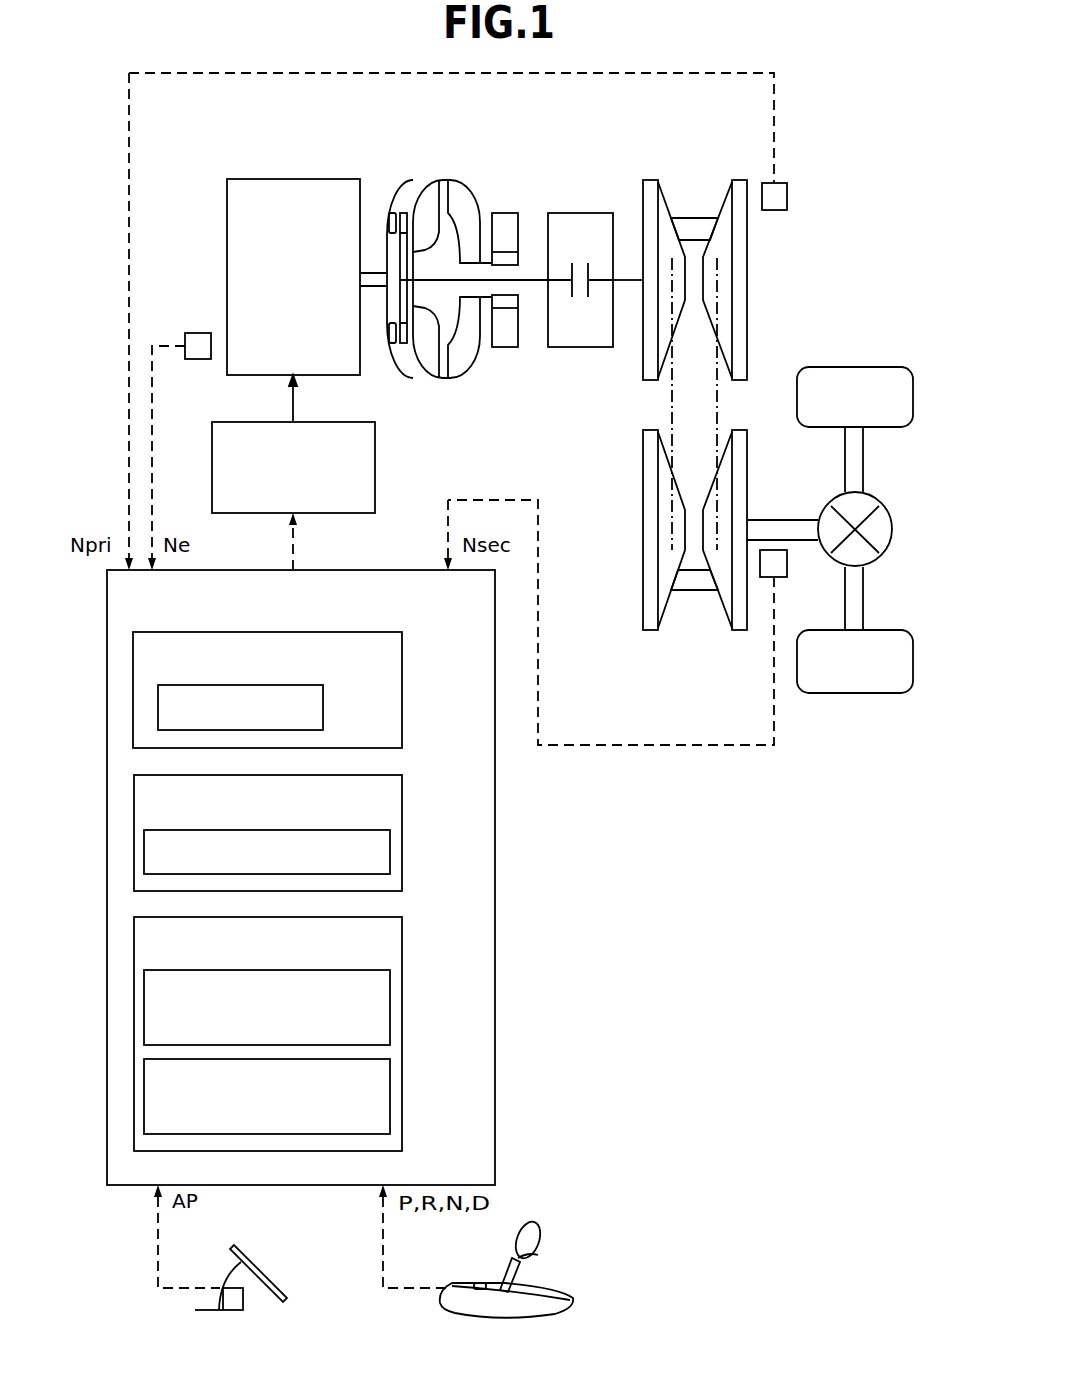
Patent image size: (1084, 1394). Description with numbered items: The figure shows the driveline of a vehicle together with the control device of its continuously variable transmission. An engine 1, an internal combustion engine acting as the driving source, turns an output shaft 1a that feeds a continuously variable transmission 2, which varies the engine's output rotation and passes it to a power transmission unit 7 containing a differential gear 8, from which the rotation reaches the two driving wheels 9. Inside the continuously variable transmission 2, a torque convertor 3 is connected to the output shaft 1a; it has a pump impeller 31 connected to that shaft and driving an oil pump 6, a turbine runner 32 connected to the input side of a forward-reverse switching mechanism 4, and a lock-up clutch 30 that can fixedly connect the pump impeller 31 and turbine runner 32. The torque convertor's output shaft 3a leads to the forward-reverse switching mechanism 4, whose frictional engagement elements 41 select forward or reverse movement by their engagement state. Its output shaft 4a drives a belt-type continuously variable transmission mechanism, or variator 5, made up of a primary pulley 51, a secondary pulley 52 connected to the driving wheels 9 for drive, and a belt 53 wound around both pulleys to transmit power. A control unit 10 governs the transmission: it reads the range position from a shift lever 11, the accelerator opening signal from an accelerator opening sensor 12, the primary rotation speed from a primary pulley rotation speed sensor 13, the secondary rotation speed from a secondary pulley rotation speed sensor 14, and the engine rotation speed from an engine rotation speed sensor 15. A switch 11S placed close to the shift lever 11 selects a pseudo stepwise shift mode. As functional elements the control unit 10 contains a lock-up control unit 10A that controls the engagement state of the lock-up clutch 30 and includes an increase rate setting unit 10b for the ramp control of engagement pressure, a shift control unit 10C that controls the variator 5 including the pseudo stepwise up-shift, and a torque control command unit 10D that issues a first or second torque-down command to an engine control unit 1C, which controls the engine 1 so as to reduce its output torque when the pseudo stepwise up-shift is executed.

The engine 1 is at (316, 178).
The output shaft of the engine 1a is at (377, 290).
The engine control unit 1C is at (375, 448).
The continuously variable transmission 2 is at (820, 266).
The torque convertor 3 is at (448, 258).
The output shaft of the torque convertor 3a is at (442, 283).
The lock-up clutch 30 is at (400, 215).
The pump impeller 31 is at (462, 198).
The turbine runner 32 is at (427, 198).
The forward-reverse switching mechanism 4 is at (591, 263).
The output shaft of the forward-reverse switching mechanism 4a is at (627, 285).
The frictional engagement elements 41 is at (581, 254).
The belt-type continuously variable transmission mechanism (variator) 5 is at (692, 374).
The primary pulley 51 is at (748, 322).
The secondary pulley 52 is at (643, 540).
The belt 53 is at (660, 413).
The oil pump 6 is at (506, 207).
The power transmission unit 7 is at (838, 528).
The differential gear 8 is at (892, 530).
The driving wheels 9 is at (866, 367).
The control unit 10 is at (301, 855).
The lock-up control unit 10A is at (304, 690).
The increase rate setting unit 10b is at (323, 702).
The shift control unit 10C is at (402, 808).
The torque control command unit 10D is at (402, 950).
The shift lever 11 is at (521, 1267).
The switch 11S is at (478, 1283).
The accelerator opening sensor 12 is at (243, 1297).
The primary pulley rotation speed sensor 13 is at (787, 195).
The secondary pulley rotation speed sensor 14 is at (788, 568).
The engine rotation speed sensor 15 is at (198, 333).